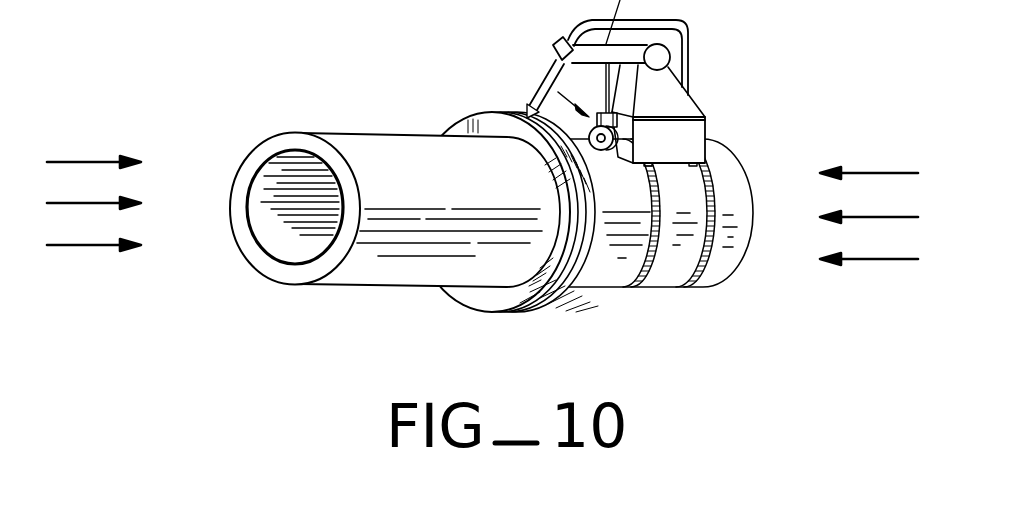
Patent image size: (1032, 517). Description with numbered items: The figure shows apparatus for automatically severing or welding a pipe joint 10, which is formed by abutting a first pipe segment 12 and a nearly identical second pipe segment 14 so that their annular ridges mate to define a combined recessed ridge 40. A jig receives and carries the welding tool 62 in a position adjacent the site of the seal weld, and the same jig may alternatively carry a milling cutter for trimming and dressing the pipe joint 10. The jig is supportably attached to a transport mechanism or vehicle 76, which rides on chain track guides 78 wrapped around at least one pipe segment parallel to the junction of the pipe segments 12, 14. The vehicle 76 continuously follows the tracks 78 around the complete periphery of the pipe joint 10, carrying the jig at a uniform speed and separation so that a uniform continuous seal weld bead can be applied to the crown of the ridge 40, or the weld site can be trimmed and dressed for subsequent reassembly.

The pipe joint 10 is at (592, 187).
The first pipe segment 12 is at (375, 280).
The second pipe segment 14 is at (583, 287).
The combined recessed ridge 40 is at (656, 244).
The welding tool 62 is at (528, 105).
The transport mechanism or vehicle 76 is at (687, 95).
The chain track guides 78 is at (657, 265).